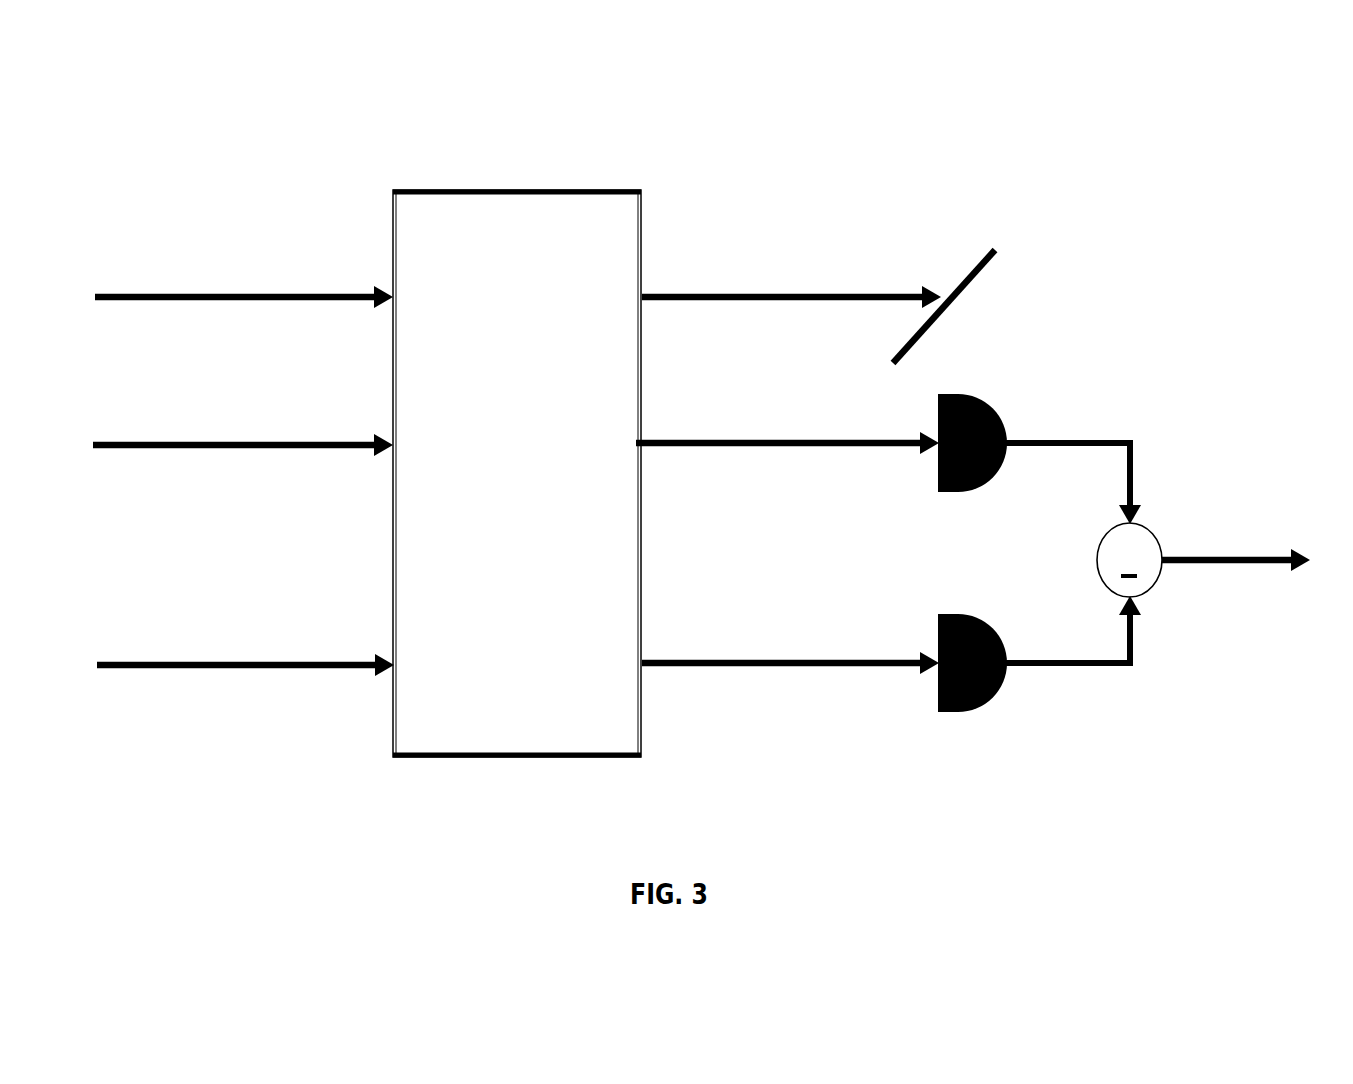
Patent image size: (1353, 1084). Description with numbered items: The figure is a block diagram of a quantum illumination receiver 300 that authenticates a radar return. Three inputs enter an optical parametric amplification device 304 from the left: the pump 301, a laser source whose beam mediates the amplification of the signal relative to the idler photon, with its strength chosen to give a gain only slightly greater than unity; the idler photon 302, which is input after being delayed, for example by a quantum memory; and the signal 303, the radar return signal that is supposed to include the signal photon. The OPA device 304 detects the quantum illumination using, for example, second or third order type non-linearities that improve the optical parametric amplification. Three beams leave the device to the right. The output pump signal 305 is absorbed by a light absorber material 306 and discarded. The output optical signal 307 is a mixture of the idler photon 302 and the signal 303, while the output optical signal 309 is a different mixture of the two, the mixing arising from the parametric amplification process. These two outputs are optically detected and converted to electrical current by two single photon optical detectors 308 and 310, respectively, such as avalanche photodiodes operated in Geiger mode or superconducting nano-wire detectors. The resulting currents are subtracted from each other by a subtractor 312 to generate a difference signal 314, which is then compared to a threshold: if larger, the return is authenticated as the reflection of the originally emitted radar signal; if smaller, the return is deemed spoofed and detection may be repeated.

The quantum illumination receiver 300 is at (815, 176).
The pump 301 is at (148, 260).
The idler photon 302 is at (148, 401).
The signal 303 is at (165, 615).
The optical parametric amplification (OPA) device 304 is at (496, 755).
The output pump signal 305 is at (791, 277).
The light absorber material 306 is at (963, 293).
The output optical signal 307 is at (787, 427).
The optical detector 308 is at (938, 472).
The output optical signal 309 is at (790, 646).
The optical detector 310 is at (984, 703).
The subtractor 312 is at (1097, 557).
The difference signal 314 is at (1298, 540).